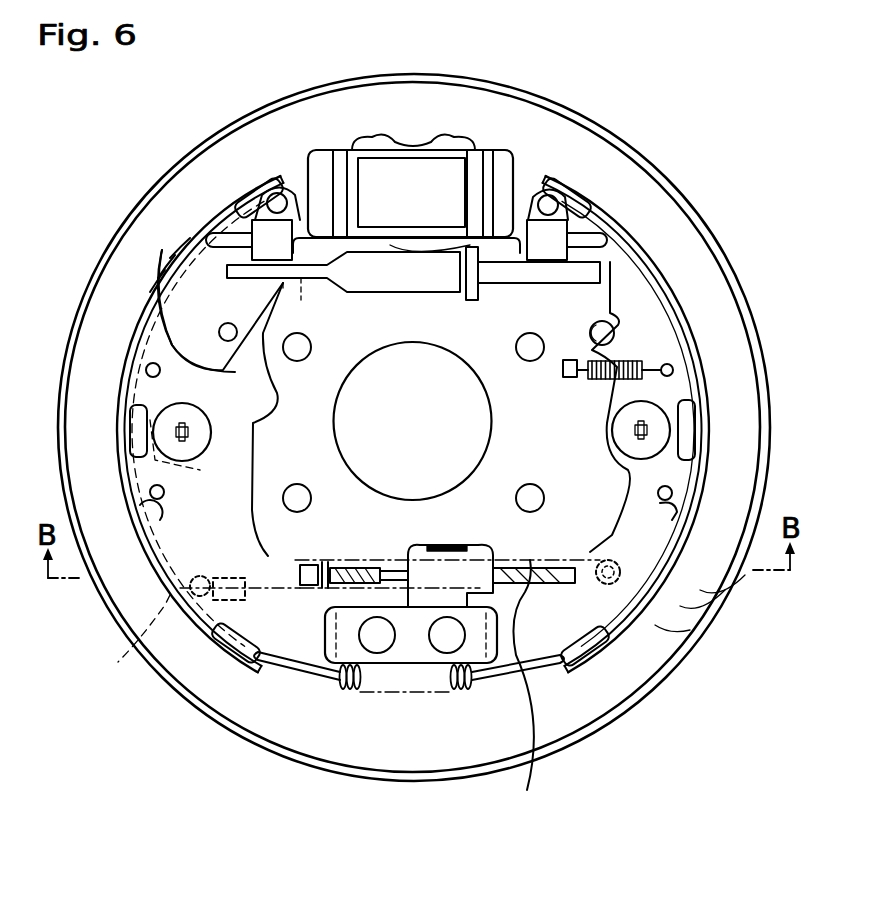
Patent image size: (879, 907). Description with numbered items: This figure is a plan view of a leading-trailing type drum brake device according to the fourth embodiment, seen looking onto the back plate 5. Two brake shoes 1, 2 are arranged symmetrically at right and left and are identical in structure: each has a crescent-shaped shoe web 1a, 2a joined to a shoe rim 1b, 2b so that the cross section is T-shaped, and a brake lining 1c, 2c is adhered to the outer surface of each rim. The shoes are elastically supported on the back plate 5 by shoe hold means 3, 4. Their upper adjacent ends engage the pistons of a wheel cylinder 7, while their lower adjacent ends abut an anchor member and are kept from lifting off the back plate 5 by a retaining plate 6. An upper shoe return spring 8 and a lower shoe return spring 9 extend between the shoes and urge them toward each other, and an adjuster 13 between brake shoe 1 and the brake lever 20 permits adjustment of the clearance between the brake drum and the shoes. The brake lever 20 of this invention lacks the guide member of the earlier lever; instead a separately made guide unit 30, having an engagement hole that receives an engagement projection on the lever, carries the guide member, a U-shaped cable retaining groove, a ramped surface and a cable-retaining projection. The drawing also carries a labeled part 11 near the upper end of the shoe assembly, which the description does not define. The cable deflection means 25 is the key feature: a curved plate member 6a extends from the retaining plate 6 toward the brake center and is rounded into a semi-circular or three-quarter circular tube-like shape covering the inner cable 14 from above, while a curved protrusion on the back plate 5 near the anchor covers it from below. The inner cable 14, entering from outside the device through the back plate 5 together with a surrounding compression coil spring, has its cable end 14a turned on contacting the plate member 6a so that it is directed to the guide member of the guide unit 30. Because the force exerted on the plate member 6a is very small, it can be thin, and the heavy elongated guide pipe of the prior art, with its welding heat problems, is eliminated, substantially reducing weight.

The brake shoe 1 is at (702, 356).
The shoe web 1a is at (722, 595).
The shoe rim 1b is at (698, 610).
The brake lining 1c is at (688, 640).
The brake shoe 2 is at (216, 209).
The shoe web 2a is at (187, 247).
The shoe rim 2b is at (170, 260).
The brake lining 2c is at (157, 277).
The shoe hold means 3 is at (668, 409).
The shoe hold means 4 is at (160, 410).
The back plate 5 is at (574, 746).
The retaining plate 6 is at (412, 645).
The curved plate member 6a is at (496, 550).
The wheel cylinder 7 is at (399, 150).
The upper shoe return spring 8 is at (588, 212).
The lower shoe return spring 9 is at (340, 688).
The parking brake lever 11 is at (272, 192).
The adjuster 13 is at (378, 283).
The inner cable 14 is at (525, 694).
The cable end 14a is at (135, 660).
The brake lever 20 is at (203, 353).
The cable deflection means 25 is at (408, 546).
The guide unit 30 is at (302, 572).